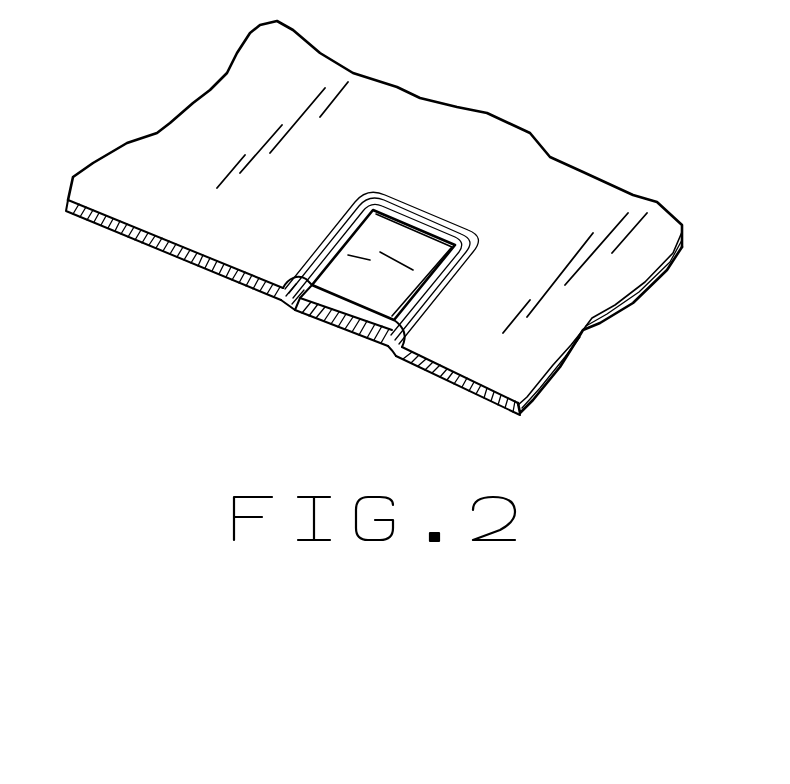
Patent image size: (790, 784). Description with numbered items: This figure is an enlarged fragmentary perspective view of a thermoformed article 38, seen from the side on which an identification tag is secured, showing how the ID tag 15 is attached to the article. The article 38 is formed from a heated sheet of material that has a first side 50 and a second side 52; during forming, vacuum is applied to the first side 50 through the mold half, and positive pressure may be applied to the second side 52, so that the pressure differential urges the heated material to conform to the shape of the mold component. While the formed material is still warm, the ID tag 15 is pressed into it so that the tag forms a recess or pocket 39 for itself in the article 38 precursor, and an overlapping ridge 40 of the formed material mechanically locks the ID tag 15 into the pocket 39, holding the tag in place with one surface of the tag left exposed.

The ID tag 15 is at (357, 284).
The article 38 is at (392, 113).
The recess or pocket 39 is at (370, 312).
The overlapping ridge 40 is at (350, 237).
The first side 50 is at (577, 200).
The second side 52 is at (585, 337).